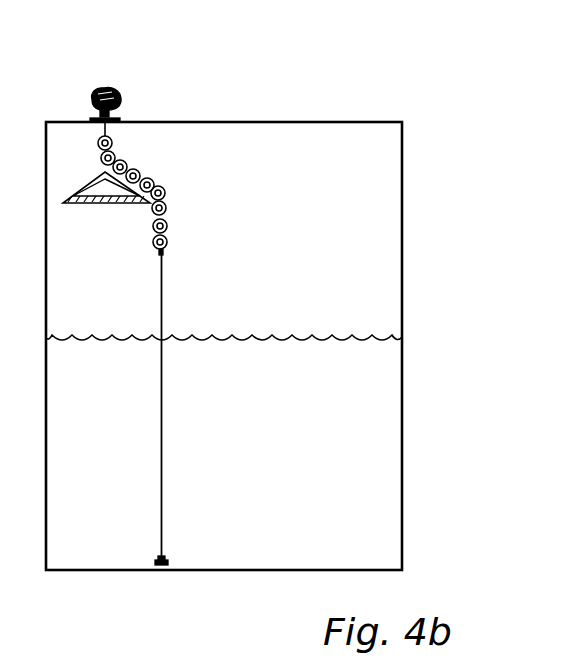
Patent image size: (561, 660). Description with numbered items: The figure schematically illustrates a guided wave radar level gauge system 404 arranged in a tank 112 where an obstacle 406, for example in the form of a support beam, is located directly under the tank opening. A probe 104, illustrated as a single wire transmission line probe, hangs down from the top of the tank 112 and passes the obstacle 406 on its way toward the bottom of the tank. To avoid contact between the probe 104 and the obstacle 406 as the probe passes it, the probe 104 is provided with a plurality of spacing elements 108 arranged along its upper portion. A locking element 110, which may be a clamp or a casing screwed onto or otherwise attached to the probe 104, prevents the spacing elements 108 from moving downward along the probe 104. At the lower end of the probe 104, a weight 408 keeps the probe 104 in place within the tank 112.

The guided wave radar level gauge system 404 is at (335, 67).
The tank 112 is at (402, 178).
The spacing elements 108 is at (165, 190).
The locking element 110 is at (165, 253).
The probe 104 is at (163, 297).
The obstacle 406 is at (90, 204).
The weight 408 is at (170, 560).